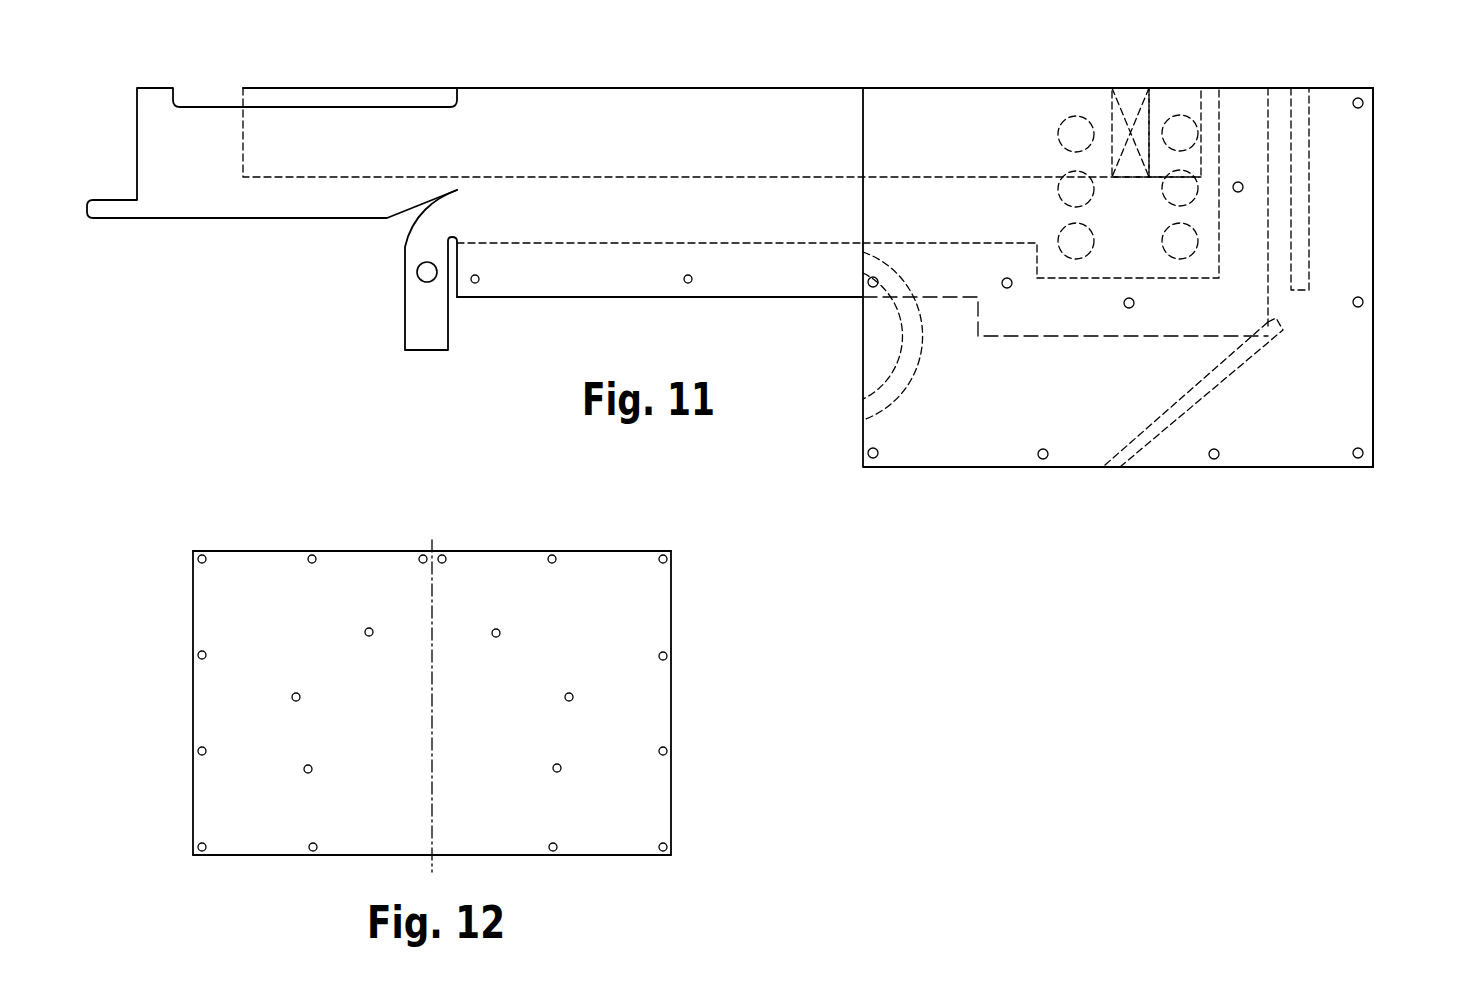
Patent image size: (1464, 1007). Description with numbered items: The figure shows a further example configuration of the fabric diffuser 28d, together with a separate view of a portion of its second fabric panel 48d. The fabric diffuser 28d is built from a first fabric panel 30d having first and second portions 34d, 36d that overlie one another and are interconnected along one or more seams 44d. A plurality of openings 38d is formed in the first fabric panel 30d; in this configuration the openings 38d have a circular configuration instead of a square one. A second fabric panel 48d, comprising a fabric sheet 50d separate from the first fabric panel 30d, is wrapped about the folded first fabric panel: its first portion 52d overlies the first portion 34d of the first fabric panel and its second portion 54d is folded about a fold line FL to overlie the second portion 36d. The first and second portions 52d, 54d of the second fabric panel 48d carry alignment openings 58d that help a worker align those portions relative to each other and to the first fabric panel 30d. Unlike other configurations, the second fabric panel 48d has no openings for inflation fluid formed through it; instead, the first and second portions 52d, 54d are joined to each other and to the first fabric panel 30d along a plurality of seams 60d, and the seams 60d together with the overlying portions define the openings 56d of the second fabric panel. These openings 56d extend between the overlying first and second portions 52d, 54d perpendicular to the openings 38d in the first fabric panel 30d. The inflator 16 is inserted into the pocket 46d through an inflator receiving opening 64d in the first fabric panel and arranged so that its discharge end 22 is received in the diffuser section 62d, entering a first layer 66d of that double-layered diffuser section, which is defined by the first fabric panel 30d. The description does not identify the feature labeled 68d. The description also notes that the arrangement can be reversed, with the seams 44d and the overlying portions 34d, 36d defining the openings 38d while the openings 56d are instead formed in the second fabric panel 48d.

In FIG. 11, the inflator 16 is at (343, 95).
In FIG. 11, the discharge end 22 is at (1128, 95).
In FIG. 11, the fabric diffuser 28d is at (570, 122).
In FIG. 11, the first fabric panel 30d is at (610, 263).
In FIG. 11, the first portion 34d is at (537, 260).
In FIG. 11, the second portion 36d is at (1290, 228).
In FIG. 11, the openings 38d is at (1063, 232).
In FIG. 11, the seams 44d is at (717, 247).
In FIG. 11, the pocket 46d is at (950, 122).
In FIG. 11, the second fabric panel 48d is at (1353, 383).
In FIG. 12, the second fabric panel 48d is at (225, 700).
In FIG. 12, the fabric sheet 50d is at (222, 798).
In FIG. 11, the first portion 52d is at (1345, 412).
In FIG. 12, the first portion 52d is at (222, 594).
In FIG. 11, the second portion 54d is at (1385, 153).
In FIG. 12, the second portion 54d is at (650, 608).
In FIG. 11, the openings 56d is at (968, 478).
In FIG. 12, the alignment openings 58d is at (198, 558).
In FIG. 11, the seams 60d is at (1309, 142).
In FIG. 11, the diffuser section 62d is at (1180, 100).
In FIG. 11, the inflator receiving opening 64d is at (208, 105).
In FIG. 11, the first layer 66d is at (1205, 262).
In FIG. 11, the recess 68d is at (1132, 400).
In FIG. 12, the fold line FL is at (430, 825).